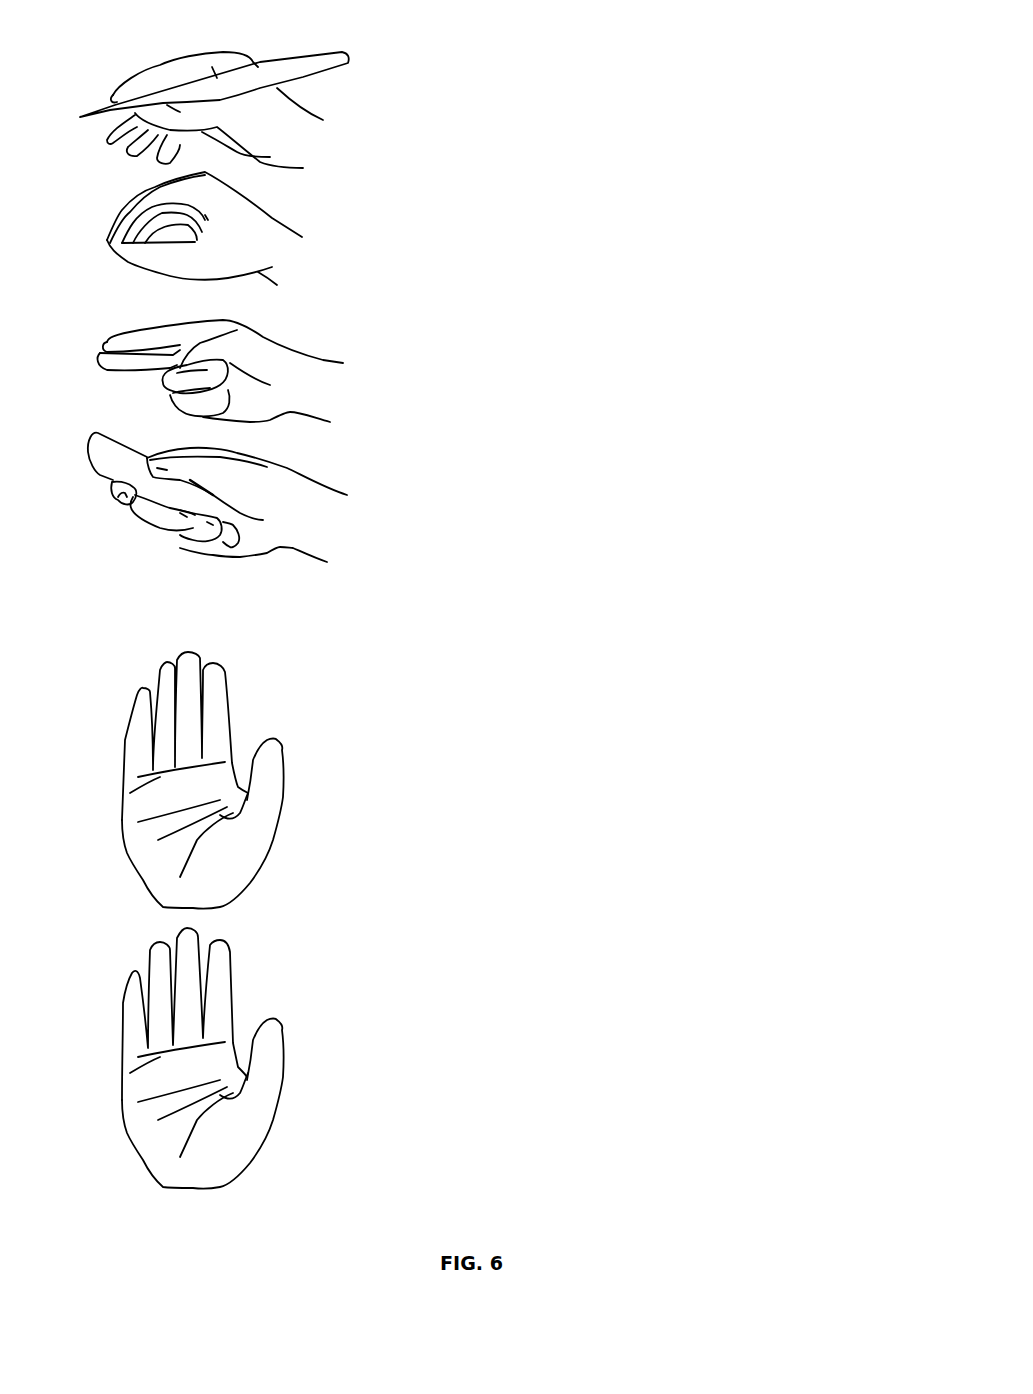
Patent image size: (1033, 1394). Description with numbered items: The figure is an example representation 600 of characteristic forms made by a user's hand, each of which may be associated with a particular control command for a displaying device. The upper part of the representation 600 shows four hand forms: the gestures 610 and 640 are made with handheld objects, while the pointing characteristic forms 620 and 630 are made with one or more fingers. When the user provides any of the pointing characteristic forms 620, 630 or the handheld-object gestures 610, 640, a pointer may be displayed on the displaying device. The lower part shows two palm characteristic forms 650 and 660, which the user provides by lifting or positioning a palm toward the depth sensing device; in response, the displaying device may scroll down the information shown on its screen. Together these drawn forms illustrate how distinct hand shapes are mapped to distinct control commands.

The representation of characteristic forms 600 is at (904, 66).
The gesture with handheld object 610 is at (405, 141).
The pointing characteristic form 620 is at (405, 278).
The pointing characteristic form 630 is at (405, 390).
The gesture with handheld object 640 is at (405, 545).
The palm characteristic form 650 is at (374, 826).
The palm characteristic form 660 is at (374, 1134).